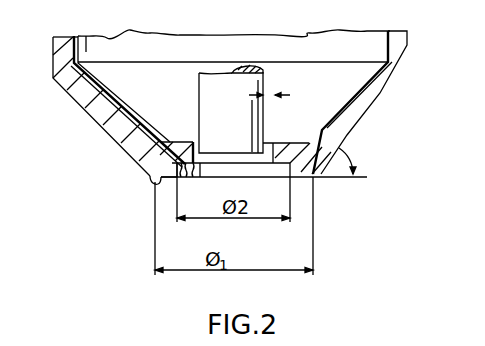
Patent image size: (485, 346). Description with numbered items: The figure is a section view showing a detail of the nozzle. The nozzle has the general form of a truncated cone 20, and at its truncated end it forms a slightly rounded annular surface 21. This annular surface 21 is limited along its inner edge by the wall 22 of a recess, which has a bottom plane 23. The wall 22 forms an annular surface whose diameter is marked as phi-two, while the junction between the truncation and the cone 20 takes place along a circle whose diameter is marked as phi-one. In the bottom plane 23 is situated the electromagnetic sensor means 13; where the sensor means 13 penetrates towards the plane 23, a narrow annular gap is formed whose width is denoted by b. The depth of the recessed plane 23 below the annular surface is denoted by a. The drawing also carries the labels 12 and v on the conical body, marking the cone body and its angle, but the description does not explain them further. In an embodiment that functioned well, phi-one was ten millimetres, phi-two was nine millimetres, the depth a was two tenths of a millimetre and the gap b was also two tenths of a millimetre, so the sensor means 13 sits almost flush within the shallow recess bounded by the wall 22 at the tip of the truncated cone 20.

The conical body 12 is at (386, 83).
The electromagnetic sensor means 13 is at (199, 92).
The truncated cone 20 is at (86, 100).
The slightly rounded annular surface 21 is at (152, 180).
The wall of the recess 22 is at (174, 176).
The bottom plane of the recess 23 is at (193, 178).
The depth of the recessed plane a is at (215, 186).
The width of the annular gap b is at (277, 92).
The cone angle v is at (349, 160).